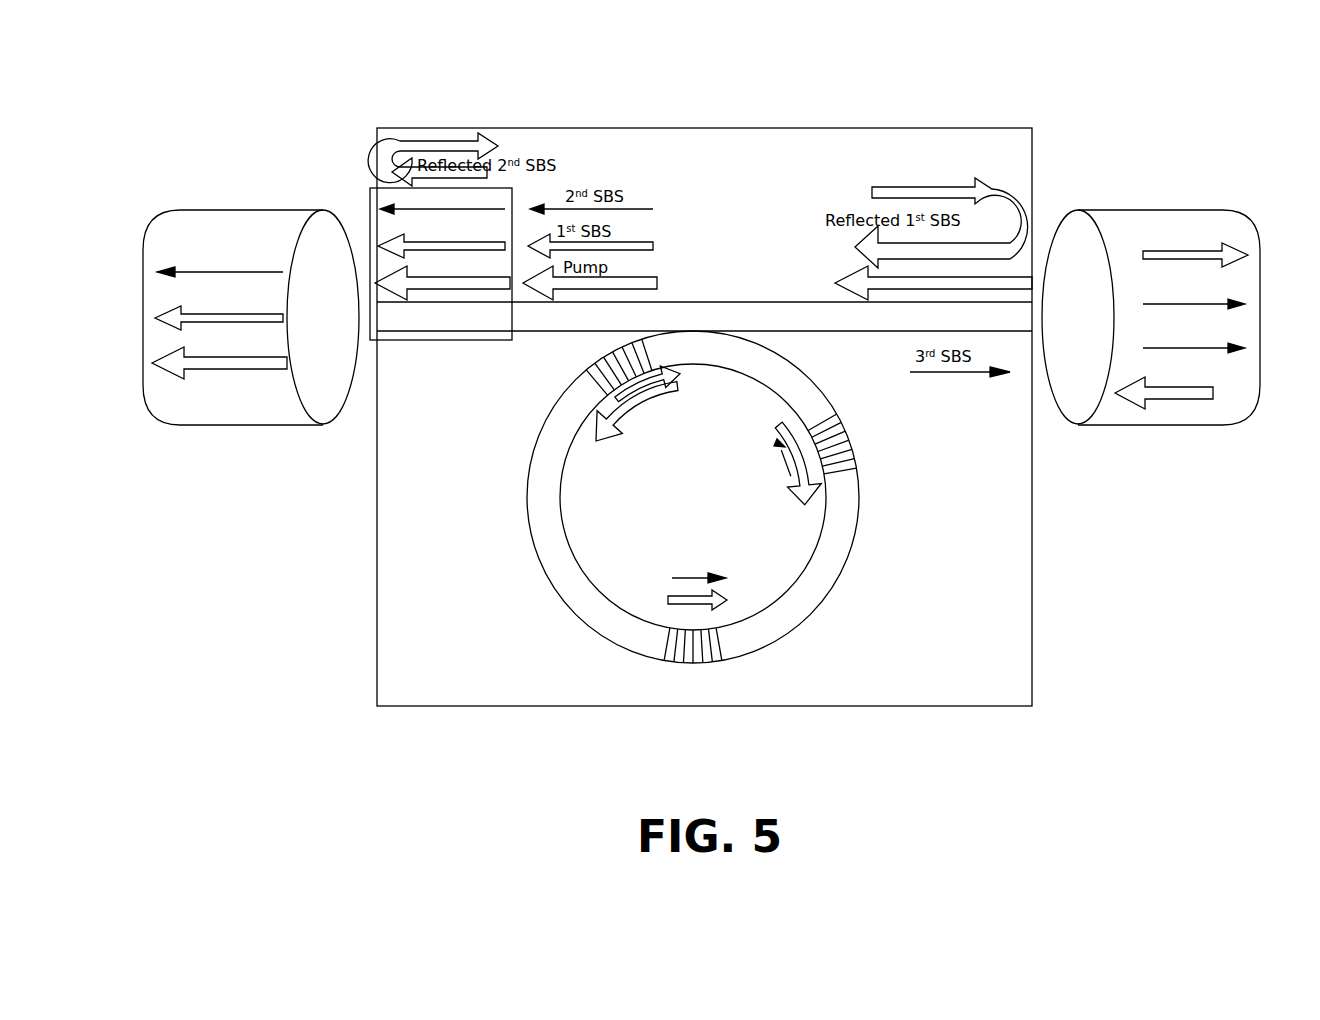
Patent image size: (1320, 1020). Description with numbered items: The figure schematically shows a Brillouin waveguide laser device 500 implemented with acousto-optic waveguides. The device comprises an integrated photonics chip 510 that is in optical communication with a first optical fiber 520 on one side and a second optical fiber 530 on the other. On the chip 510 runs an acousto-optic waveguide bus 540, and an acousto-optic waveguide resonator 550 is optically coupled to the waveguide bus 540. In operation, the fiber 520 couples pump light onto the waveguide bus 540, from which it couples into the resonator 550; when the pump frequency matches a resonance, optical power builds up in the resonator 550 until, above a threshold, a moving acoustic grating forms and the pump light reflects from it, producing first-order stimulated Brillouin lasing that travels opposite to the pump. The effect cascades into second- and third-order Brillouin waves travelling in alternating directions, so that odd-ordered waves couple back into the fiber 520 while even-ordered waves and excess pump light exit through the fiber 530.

The Brillouin waveguide laser device 500 is at (523, 74).
The integrated photonics chip 510 is at (1045, 630).
The first optical fiber 520 is at (1147, 425).
The second optical fiber 530 is at (247, 425).
The acousto-optic waveguide bus 540 is at (703, 308).
The acousto-optic waveguide resonator 550 is at (790, 620).